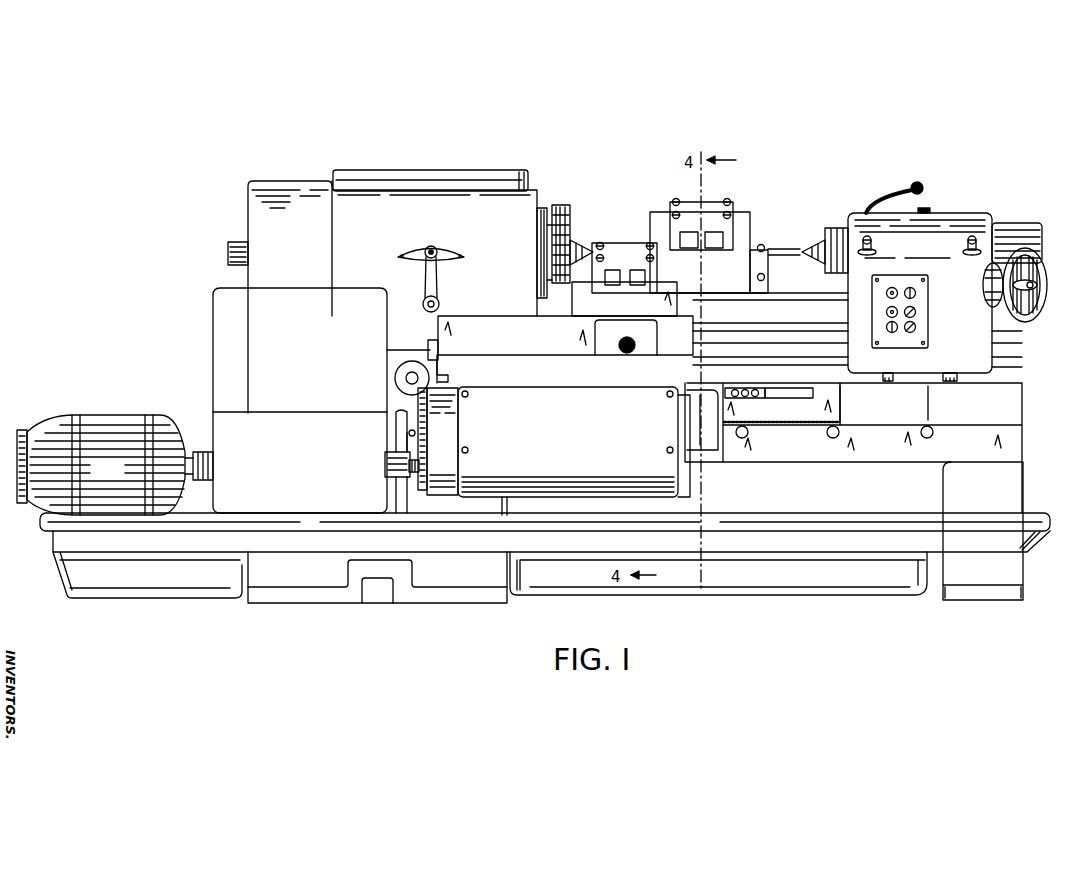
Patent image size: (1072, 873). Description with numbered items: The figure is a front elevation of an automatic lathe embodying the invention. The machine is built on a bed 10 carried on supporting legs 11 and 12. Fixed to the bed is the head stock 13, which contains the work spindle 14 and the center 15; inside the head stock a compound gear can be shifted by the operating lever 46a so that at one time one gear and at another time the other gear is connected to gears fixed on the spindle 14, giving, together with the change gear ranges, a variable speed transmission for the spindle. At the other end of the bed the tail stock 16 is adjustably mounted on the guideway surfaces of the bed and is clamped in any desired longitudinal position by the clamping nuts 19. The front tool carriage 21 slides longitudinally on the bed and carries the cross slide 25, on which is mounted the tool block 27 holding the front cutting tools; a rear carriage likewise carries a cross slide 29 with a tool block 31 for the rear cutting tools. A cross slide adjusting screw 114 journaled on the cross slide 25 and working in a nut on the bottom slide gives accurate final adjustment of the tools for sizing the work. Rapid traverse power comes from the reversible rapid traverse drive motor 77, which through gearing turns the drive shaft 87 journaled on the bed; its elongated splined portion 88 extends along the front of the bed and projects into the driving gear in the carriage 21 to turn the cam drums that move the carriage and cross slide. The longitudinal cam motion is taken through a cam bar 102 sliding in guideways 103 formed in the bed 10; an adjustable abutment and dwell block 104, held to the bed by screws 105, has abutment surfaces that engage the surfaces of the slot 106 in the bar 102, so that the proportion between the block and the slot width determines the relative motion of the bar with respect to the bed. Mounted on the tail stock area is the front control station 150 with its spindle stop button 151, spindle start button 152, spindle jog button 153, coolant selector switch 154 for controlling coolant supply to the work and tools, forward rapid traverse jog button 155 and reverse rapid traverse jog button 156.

The bed 10 is at (1022, 400).
The supporting leg 11 is at (1017, 578).
The supporting leg 12 is at (315, 592).
The head stock 13 is at (427, 192).
The work spindle 14 is at (572, 228).
The center 15 is at (588, 244).
The tail stock 16 is at (973, 220).
The clamping nuts 19 is at (958, 240).
The front tool carriage 21 is at (542, 427).
The cross slide 25 is at (578, 331).
The tool block 27 is at (624, 268).
The cross slide 29 is at (747, 218).
The tool block 31 is at (712, 206).
The operating lever 46a is at (437, 281).
The rapid traverse drive motor 77 is at (115, 465).
The drive shaft 87 is at (385, 462).
The splined portion 88 is at (417, 464).
The cam bar 102 is at (838, 399).
The guideways 103 is at (973, 420).
The adjustable abutment and dwell block 104 is at (728, 388).
The screws 105 is at (740, 388).
The slot 106 is at (800, 395).
The cross slide adjusting screw 114 is at (623, 356).
The front control station 150 is at (923, 329).
The spindle stop button 151 is at (893, 287).
The spindle start button 152 is at (886, 311).
The spindle jog button 153 is at (891, 333).
The coolant selector switch 154 is at (911, 287).
The forward rapid traverse jog button 155 is at (914, 310).
The reverse rapid traverse jog button 156 is at (915, 325).